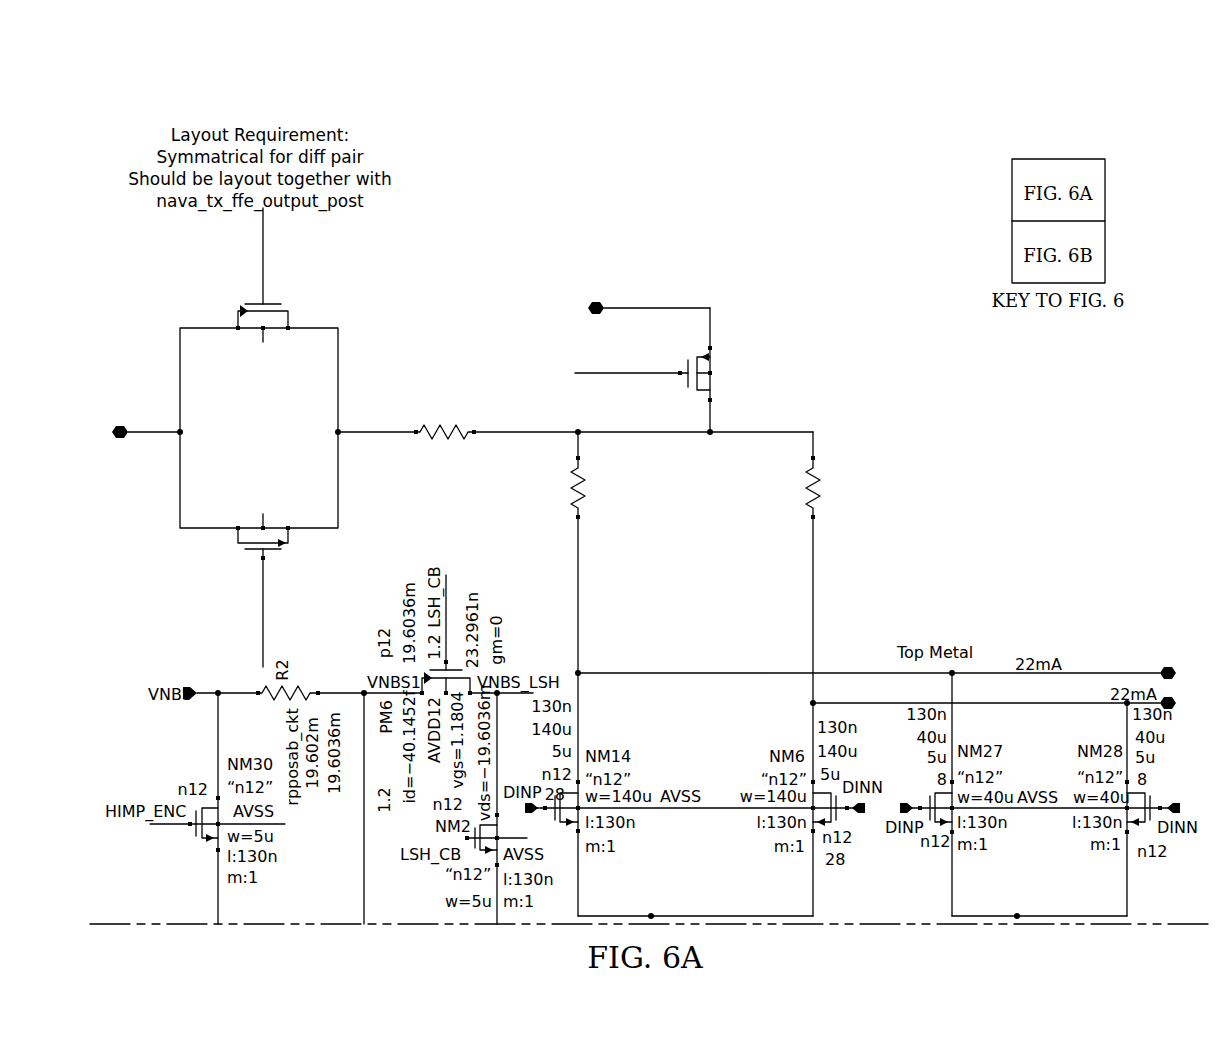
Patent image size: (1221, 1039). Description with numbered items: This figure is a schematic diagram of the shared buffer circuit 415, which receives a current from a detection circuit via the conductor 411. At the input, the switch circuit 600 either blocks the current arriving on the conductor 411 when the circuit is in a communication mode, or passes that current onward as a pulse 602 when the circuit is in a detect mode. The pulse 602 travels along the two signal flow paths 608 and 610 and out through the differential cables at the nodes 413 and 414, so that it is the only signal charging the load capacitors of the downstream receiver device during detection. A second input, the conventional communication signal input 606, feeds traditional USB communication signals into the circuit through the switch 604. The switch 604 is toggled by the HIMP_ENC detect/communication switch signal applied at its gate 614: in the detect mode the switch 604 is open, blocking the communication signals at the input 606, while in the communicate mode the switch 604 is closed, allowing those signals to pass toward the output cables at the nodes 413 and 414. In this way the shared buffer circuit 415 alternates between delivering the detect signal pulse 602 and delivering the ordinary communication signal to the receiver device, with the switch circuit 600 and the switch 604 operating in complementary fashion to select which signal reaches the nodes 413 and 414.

The conductor 411 is at (137, 420).
The switch circuit 600 is at (358, 528).
The pulse 602 is at (398, 444).
The switch 604 is at (845, 335).
The conventional communication signal input 606 is at (595, 302).
The signal flow path 608 is at (570, 422).
The signal flow path 610 is at (785, 423).
The gate 614 is at (575, 373).
The shared buffer circuit 415 is at (922, 386).
The node 413 is at (892, 664).
The node 414 is at (1010, 716).